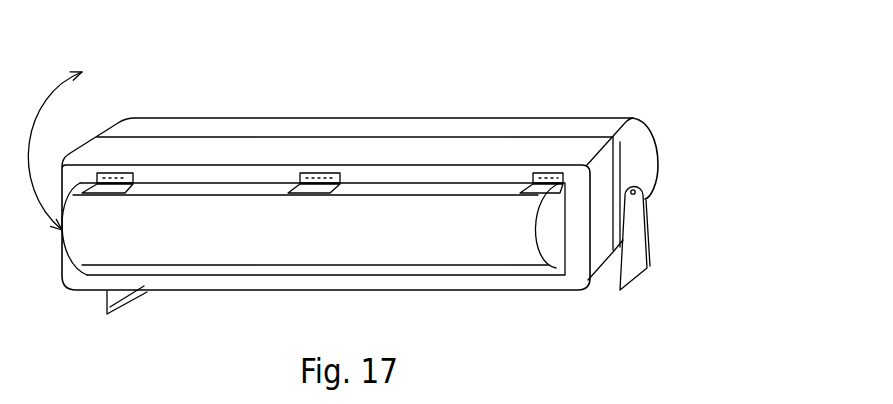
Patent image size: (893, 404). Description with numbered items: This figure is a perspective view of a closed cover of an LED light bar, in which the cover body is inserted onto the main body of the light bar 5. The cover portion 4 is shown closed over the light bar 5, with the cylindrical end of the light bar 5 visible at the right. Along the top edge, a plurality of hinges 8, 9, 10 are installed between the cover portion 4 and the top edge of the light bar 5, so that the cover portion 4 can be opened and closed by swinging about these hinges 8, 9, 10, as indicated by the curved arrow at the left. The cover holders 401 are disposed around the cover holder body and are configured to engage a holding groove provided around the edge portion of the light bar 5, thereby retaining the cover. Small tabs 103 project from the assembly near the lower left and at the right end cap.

The cover portion 4 is at (98, 237).
The light bar 5 is at (640, 143).
The hinge 8 is at (113, 182).
The hinge 9 is at (538, 177).
The hinge 10 is at (333, 177).
The flap 103 is at (633, 245).
The cover holder 401 is at (557, 152).